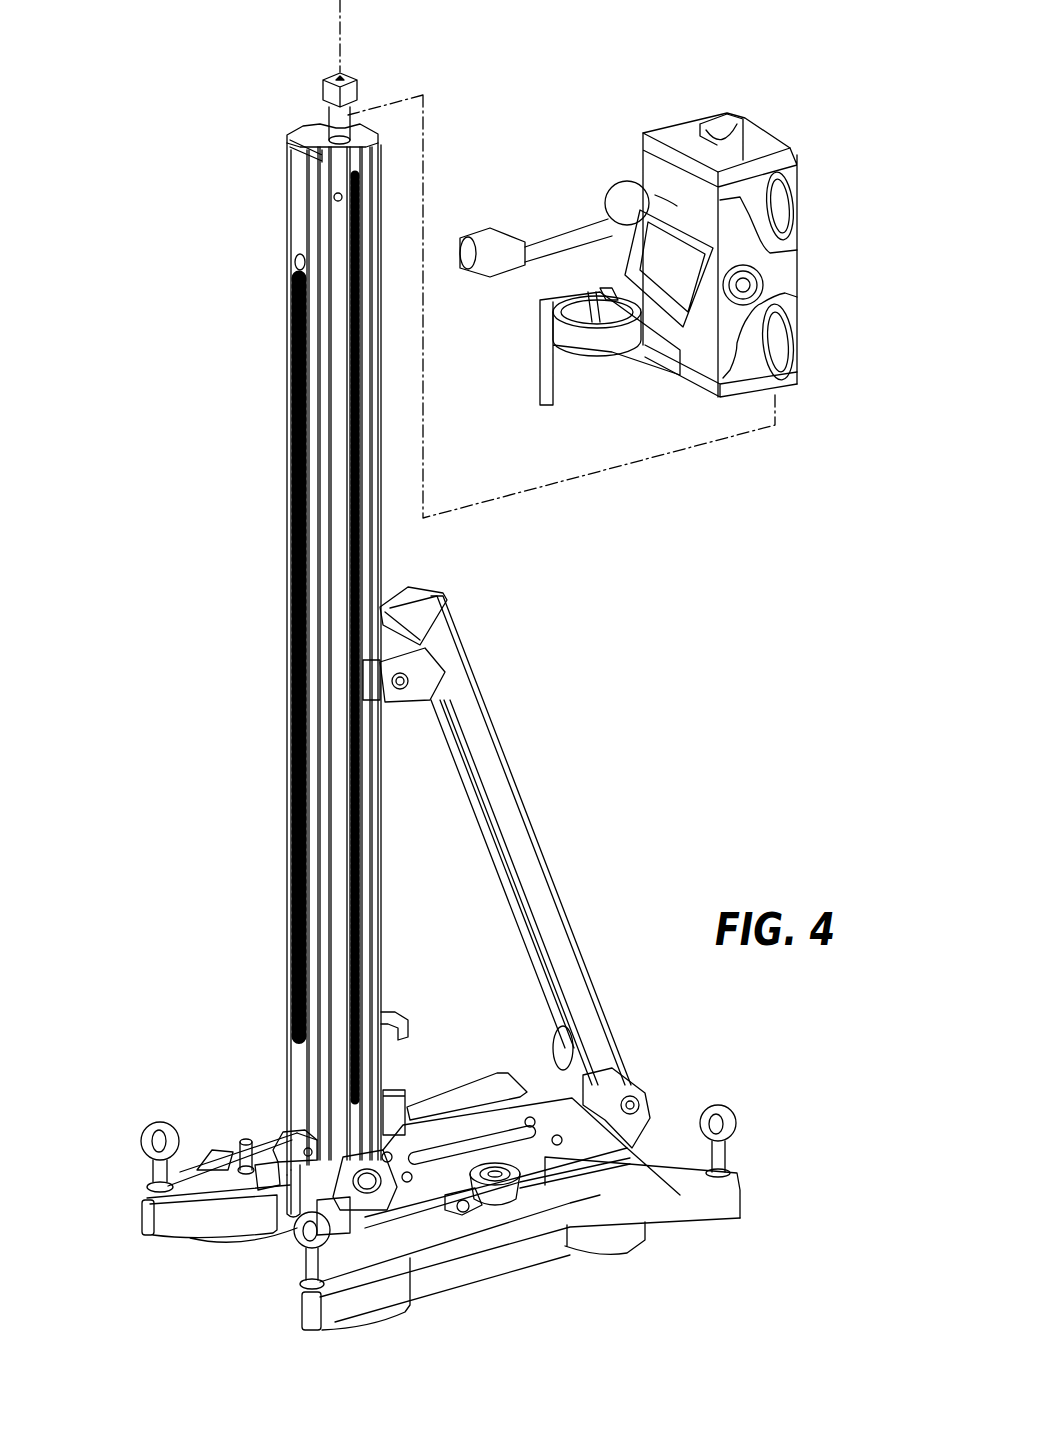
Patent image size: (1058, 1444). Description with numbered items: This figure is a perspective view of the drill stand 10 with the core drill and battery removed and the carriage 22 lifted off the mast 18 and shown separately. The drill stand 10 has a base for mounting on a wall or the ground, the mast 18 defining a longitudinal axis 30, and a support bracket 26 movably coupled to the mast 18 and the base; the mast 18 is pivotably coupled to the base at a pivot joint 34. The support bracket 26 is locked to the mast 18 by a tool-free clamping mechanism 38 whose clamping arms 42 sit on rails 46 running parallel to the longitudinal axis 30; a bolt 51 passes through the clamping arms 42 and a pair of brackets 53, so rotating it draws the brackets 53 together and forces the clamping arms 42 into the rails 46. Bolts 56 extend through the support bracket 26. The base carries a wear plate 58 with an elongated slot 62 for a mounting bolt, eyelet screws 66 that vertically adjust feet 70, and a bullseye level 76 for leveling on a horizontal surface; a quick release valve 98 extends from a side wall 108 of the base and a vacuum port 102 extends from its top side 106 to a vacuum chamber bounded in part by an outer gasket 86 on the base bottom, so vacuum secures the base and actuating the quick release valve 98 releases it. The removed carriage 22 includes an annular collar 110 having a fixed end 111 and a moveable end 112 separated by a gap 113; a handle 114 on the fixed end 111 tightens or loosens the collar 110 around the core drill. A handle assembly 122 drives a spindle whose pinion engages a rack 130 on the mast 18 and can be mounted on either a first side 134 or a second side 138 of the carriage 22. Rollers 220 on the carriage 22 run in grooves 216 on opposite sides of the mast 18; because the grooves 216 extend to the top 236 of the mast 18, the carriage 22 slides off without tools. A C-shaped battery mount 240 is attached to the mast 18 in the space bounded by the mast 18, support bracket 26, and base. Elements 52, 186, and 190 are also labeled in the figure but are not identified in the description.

The drill stand 10 is at (114, 400).
The mast 18 is at (296, 200).
The carriage 22 is at (815, 204).
The support bracket 26 is at (503, 763).
The longitudinal axis 30 is at (342, 45).
The pivot joint 34 is at (372, 1187).
The tool-free clamping mechanism 38 is at (392, 620).
The clamping arms 42 is at (367, 700).
The rails 46 is at (367, 863).
The bolt 51 is at (407, 697).
The base wing 52 is at (217, 1157).
The brackets 53 is at (417, 667).
The bolts 56 is at (607, 1083).
The wear plate 58 is at (440, 1160).
The elongated slot 62 is at (433, 1147).
The eyelet screws 66 is at (150, 1133).
The feet 70 is at (158, 1237).
The bullseye level 76 is at (497, 1195).
The outer gasket 86 is at (613, 1250).
The quick release valve 98 is at (465, 1213).
The vacuum port 102 is at (245, 1143).
The top side 106 is at (267, 1177).
The side wall 108 is at (449, 1207).
The annular collar 110 is at (580, 350).
The fixed end 111 is at (617, 305).
The moveable end 112 is at (592, 292).
The gap 113 is at (578, 350).
The handle 114 is at (540, 382).
The handle assembly 122 is at (556, 208).
The rack 130 is at (290, 370).
The first side 134 is at (737, 343).
The second side 138 is at (677, 198).
The handle ball 186 is at (630, 200).
The handle grip 190 is at (498, 263).
The grooves 216 is at (308, 140).
The rollers 220 is at (777, 210).
The top 236 is at (358, 132).
The battery mount 240 is at (398, 1017).